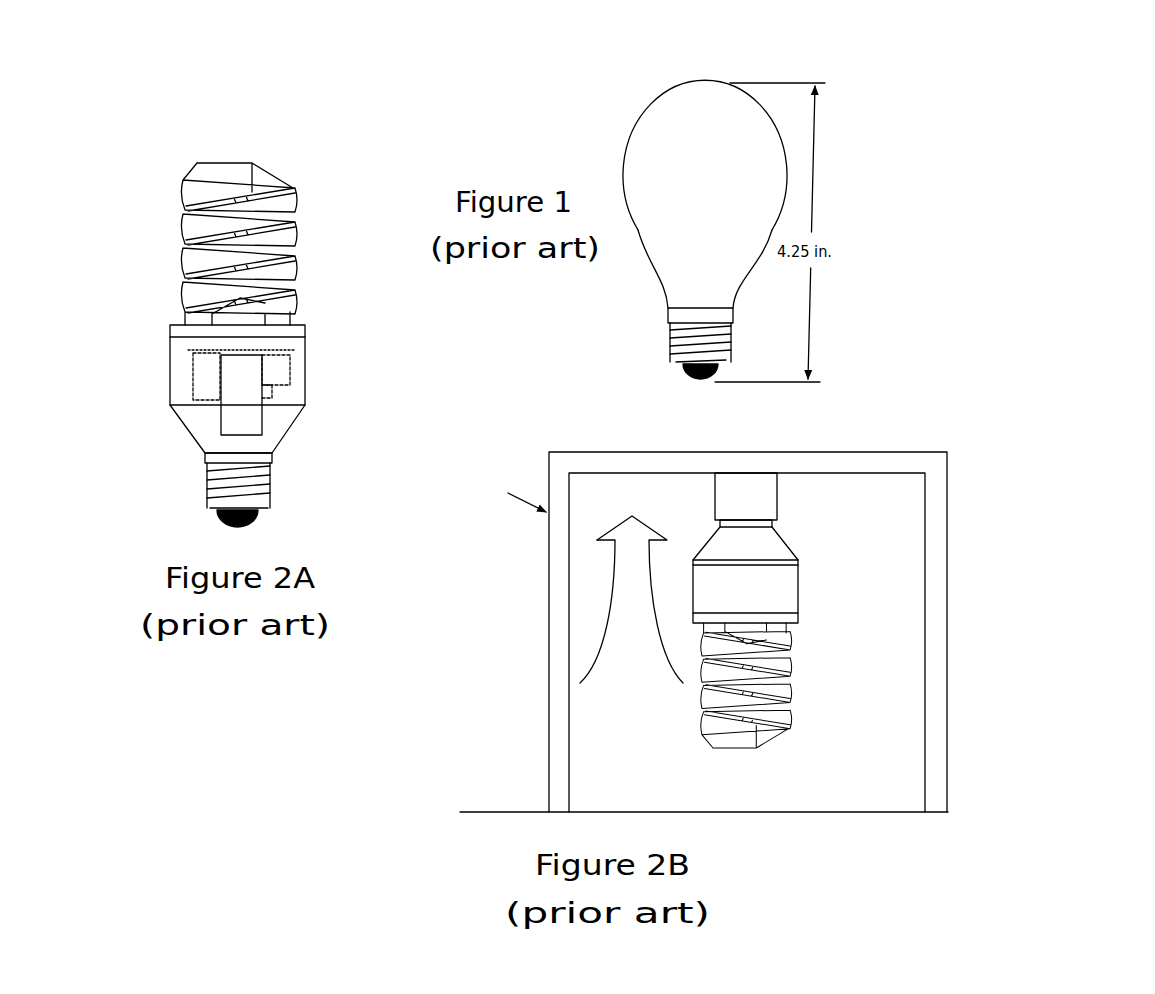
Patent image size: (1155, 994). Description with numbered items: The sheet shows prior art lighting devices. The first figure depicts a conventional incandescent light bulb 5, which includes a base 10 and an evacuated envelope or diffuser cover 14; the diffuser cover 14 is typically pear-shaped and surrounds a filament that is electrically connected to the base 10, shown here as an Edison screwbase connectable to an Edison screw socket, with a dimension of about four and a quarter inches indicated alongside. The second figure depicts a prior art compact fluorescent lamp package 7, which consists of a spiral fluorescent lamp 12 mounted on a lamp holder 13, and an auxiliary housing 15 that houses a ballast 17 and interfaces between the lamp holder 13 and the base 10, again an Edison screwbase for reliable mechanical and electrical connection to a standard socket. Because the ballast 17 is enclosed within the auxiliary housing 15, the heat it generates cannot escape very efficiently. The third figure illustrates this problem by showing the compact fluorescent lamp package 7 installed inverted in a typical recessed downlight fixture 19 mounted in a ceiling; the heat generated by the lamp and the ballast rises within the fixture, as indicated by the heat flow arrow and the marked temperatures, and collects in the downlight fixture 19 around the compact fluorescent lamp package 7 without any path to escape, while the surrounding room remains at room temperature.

In FIG. 1, the incandescent light bulb 5 is at (702, 68).
In FIG. 2A, the compact fluorescent lamp package 7 is at (187, 291).
In FIG. 2B, the compact fluorescent lamp package 7 is at (847, 588).
In FIG. 1, the base 10 is at (683, 333).
In FIG. 2A, the base 10 is at (212, 475).
In FIG. 2A, the fluorescent lamp 12 is at (188, 190).
In FIG. 2A, the lamp holder 13 is at (170, 332).
In FIG. 1, the diffuser cover 14 is at (637, 128).
In FIG. 2A, the auxiliary housing 15 is at (170, 384).
In FIG. 2A, the ballast 17 is at (184, 370).
In FIG. 2B, the downlight fixture 19 is at (934, 441).